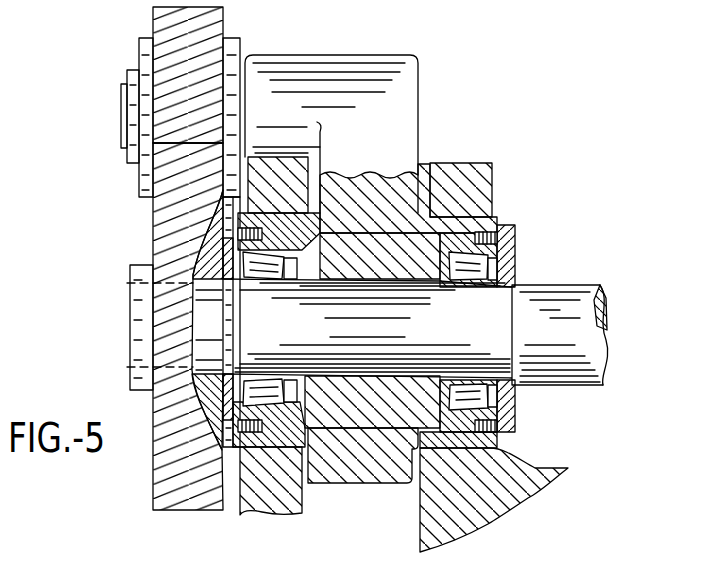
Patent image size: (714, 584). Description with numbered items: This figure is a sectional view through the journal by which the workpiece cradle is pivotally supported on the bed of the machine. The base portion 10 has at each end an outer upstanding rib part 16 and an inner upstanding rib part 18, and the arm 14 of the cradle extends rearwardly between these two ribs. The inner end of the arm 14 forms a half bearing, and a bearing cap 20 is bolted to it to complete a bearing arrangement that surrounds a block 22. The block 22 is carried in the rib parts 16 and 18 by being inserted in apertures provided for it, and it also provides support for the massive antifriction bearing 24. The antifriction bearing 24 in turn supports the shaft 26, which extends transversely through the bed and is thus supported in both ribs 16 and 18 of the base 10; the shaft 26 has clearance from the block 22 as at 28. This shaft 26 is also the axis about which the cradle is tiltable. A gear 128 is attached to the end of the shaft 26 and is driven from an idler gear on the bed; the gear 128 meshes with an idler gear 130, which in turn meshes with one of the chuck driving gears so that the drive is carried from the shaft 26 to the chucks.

The base portion 10 is at (522, 497).
The arm 14 is at (420, 167).
The outer upstanding rib part 16 is at (260, 512).
The inner upstanding rib part 18 is at (492, 168).
The bearing cap 20 is at (362, 483).
The block 22 is at (473, 442).
The antifriction bearing 24 is at (278, 262).
The shaft 26 is at (572, 386).
The clearance 28 is at (331, 377).
The gear 128 is at (166, 508).
The idler gear 130 is at (222, 29).